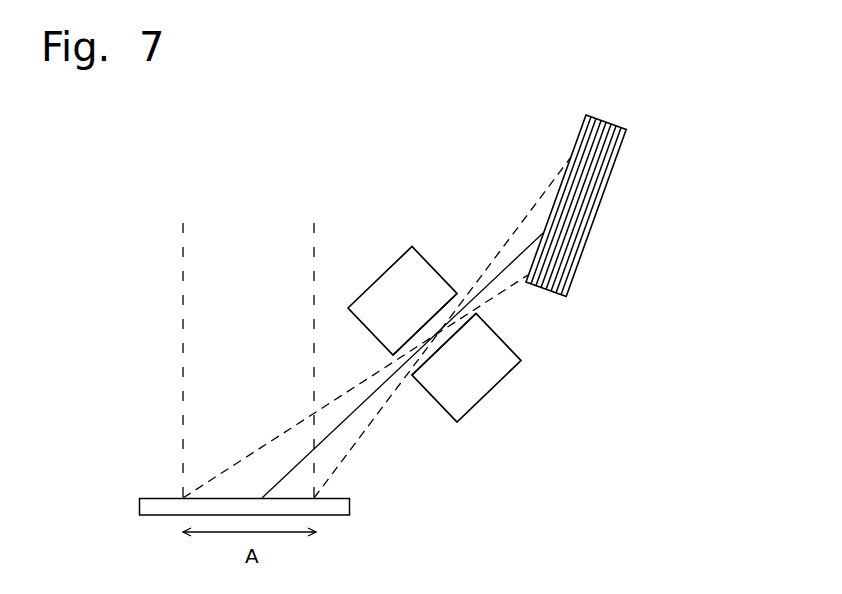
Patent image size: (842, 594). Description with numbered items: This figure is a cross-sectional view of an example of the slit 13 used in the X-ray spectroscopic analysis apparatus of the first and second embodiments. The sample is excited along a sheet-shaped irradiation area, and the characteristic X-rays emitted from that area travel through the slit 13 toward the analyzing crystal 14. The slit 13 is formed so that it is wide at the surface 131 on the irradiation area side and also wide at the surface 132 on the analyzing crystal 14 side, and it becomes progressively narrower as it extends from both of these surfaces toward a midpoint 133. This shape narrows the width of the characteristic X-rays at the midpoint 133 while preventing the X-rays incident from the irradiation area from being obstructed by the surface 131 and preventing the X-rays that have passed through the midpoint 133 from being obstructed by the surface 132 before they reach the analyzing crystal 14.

The slit 13 is at (426, 354).
The surface on irradiation area side 131 is at (400, 370).
The surface on analyzing crystal side 132 is at (477, 312).
The midpoint 133 is at (432, 328).
The analyzing crystal 14 is at (578, 207).